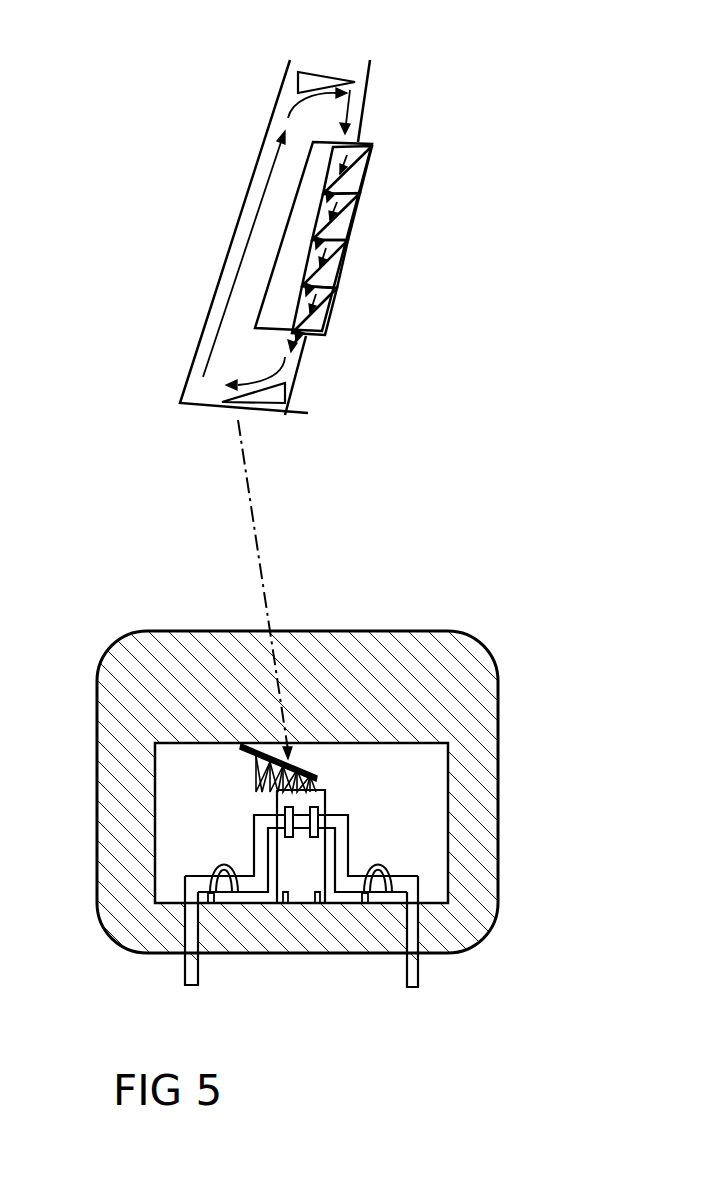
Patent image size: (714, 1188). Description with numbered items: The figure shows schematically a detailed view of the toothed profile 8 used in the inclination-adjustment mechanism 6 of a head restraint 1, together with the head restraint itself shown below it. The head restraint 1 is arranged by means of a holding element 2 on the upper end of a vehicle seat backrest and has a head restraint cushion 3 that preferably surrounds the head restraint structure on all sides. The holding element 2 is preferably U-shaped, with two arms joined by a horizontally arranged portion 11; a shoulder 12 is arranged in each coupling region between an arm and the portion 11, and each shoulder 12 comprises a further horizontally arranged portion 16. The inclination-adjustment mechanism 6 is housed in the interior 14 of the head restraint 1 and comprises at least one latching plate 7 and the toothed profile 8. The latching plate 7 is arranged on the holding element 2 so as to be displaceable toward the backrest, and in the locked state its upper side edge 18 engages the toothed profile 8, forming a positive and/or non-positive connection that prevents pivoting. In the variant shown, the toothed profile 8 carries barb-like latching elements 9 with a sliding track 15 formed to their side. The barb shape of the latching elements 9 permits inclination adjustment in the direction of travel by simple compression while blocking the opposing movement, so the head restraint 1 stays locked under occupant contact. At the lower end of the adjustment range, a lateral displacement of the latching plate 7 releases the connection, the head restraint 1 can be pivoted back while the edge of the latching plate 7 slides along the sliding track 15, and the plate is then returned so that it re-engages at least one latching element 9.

The head restraint 1 is at (298, 634).
The holding element 2 is at (420, 975).
The head restraint cushion 3 is at (492, 690).
The inclination-adjustment mechanism 6 is at (458, 806).
The latching plate 7 is at (326, 808).
The toothed profile 8 is at (295, 31).
The latching elements 9 is at (360, 173).
The horizontally arranged portion 11 is at (255, 820).
The shoulder 12 is at (207, 884).
The interior 14 is at (407, 807).
The sliding track 15 is at (268, 229).
The further horizontally arranged portion 16 is at (353, 887).
The upper side edge 18 is at (258, 790).